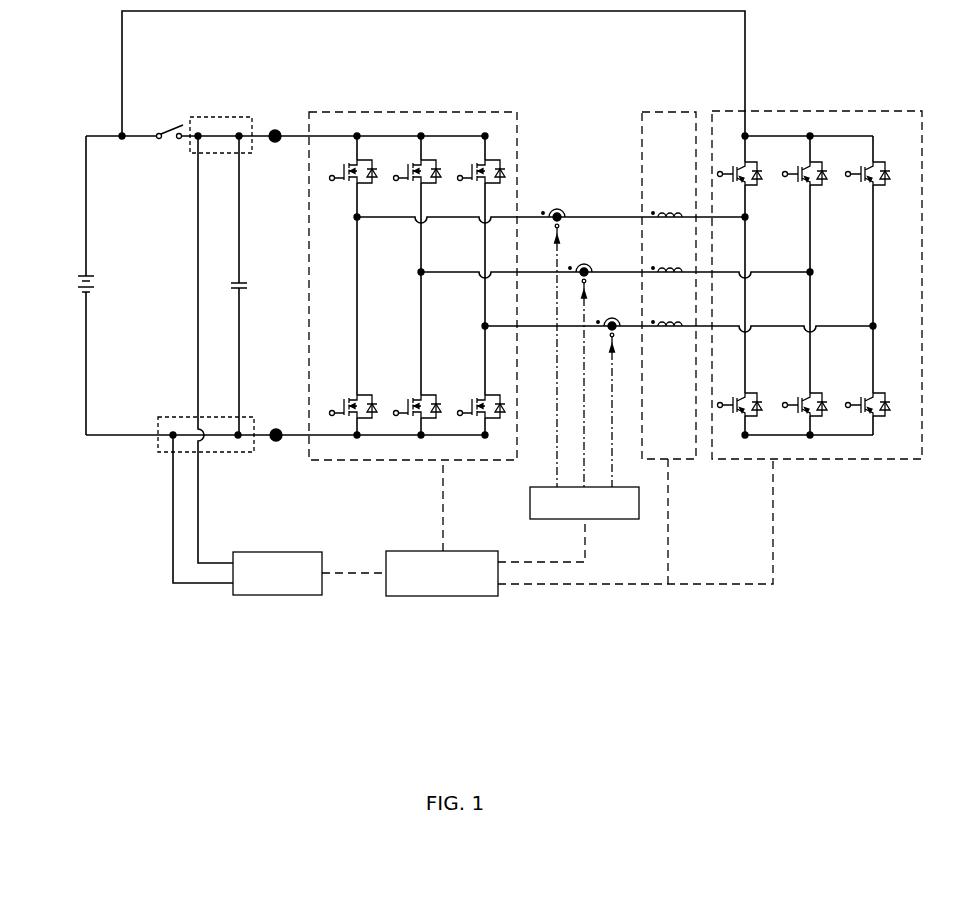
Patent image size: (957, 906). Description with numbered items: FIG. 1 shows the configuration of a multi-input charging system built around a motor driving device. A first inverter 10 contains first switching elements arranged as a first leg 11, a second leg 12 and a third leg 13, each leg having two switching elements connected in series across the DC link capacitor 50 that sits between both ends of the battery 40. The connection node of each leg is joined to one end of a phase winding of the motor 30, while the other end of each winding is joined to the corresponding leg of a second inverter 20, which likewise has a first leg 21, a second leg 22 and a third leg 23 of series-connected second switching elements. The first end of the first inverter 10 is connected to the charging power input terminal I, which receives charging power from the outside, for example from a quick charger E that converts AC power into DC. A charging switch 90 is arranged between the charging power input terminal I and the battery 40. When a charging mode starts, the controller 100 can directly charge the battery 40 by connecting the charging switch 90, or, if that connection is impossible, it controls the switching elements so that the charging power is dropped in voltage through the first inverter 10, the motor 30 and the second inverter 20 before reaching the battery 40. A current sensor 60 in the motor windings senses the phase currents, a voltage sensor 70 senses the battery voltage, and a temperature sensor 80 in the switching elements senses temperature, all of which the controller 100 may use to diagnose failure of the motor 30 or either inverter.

The first inverter 10 is at (410, 112).
The first leg 11 is at (357, 442).
The second leg 12 is at (421, 442).
The third leg 13 is at (485, 442).
The second inverter 20 is at (815, 111).
The first leg 21 is at (745, 442).
The second leg 22 is at (810, 442).
The third leg 23 is at (873, 442).
The motor 30 is at (675, 112).
The battery 40 is at (82, 276).
The DC link capacitor 50 is at (242, 283).
The current sensor 60 is at (620, 519).
The voltage sensor 70 is at (275, 130).
The temperature sensor 80 is at (366, 160).
The charging switch 90 is at (170, 128).
The controller 100 is at (443, 596).
The charging power input terminal I is at (221, 117).
The quick charger E is at (285, 596).